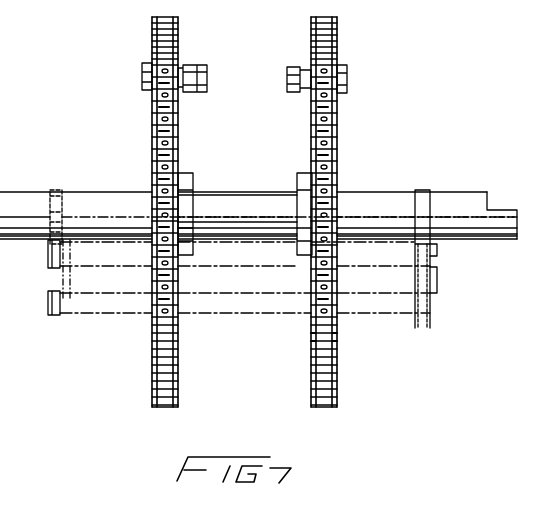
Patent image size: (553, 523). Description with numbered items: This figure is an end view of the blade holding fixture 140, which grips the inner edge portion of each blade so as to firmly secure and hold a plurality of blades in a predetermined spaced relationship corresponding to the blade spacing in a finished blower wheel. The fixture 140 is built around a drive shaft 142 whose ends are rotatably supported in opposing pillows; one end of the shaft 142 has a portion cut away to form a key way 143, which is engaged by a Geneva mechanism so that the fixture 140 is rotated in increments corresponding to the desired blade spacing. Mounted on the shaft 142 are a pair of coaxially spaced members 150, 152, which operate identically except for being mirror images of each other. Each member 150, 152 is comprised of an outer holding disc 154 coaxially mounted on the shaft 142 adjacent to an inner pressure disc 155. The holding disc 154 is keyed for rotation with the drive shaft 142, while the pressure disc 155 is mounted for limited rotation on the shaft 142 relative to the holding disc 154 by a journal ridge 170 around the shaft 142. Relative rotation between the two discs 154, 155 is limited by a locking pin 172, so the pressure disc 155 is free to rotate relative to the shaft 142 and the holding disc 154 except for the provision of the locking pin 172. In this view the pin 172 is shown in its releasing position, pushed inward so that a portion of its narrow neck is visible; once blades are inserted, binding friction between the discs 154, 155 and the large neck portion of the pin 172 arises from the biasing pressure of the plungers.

The blade holding fixture 140 is at (366, 56).
The drive shaft 142 is at (10, 200).
The key way 143 is at (490, 200).
The coaxially spaced member 150 is at (298, 385).
The coaxially spaced member 152 is at (140, 375).
The outer holding disc 154 is at (327, 333).
The inner pressure disc 155 is at (312, 342).
The journal ridge 170 is at (305, 172).
The locking pin 172 is at (216, 74).